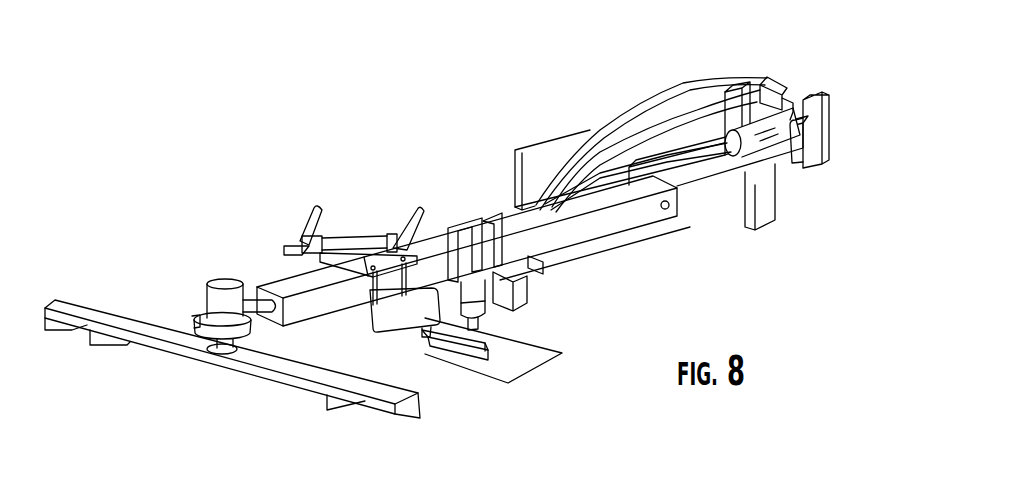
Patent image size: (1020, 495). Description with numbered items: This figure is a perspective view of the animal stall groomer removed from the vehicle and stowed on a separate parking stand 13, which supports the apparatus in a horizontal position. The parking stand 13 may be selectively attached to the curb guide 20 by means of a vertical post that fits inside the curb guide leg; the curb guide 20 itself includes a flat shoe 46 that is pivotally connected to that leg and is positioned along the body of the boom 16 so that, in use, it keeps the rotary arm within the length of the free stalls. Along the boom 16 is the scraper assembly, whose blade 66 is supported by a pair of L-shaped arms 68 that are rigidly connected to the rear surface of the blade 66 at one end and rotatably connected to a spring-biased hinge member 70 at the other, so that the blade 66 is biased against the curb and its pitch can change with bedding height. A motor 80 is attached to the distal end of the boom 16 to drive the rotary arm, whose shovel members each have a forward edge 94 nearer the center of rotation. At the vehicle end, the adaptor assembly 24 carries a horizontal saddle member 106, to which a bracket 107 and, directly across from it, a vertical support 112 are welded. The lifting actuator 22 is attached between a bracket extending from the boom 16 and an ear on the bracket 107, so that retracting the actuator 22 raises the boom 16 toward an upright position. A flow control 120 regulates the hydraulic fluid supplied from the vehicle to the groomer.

The parking stand 13 is at (520, 358).
The boom 16 is at (558, 240).
The curb guide 20 is at (489, 308).
The lifting actuator 22 is at (757, 132).
The adaptor assembly 24 is at (543, 130).
The flat shoe 46 is at (462, 340).
The blade 66 is at (384, 311).
The L-shaped arms 68 is at (303, 224).
The hinge member 70 is at (336, 236).
The motor 80 is at (227, 282).
The forward edge 94 is at (165, 352).
The saddle member 106 is at (702, 186).
The bracket 107 is at (817, 142).
The vertical support 112 is at (765, 200).
The flow control 120 is at (787, 89).